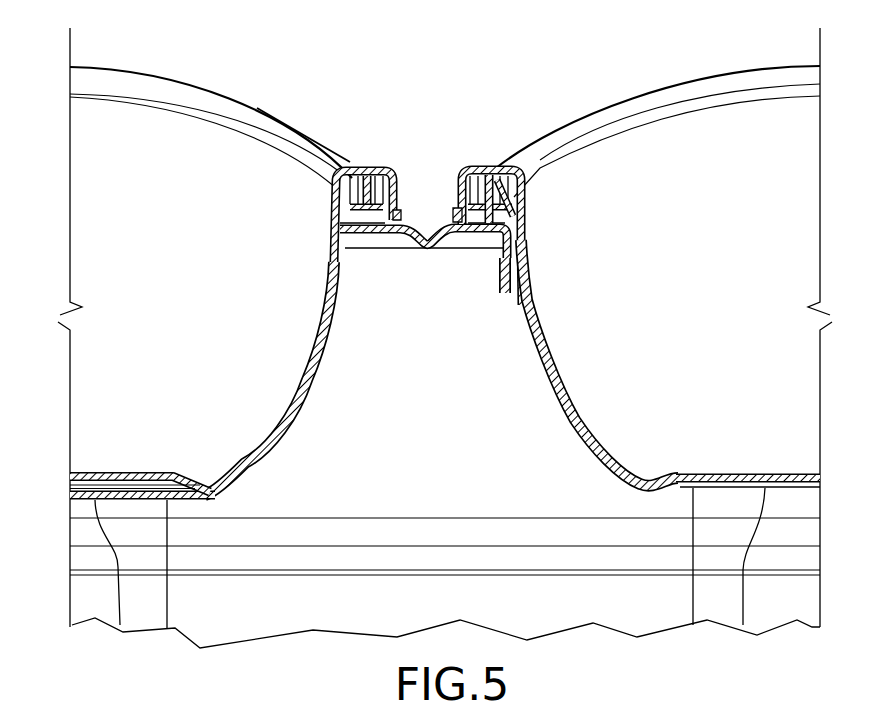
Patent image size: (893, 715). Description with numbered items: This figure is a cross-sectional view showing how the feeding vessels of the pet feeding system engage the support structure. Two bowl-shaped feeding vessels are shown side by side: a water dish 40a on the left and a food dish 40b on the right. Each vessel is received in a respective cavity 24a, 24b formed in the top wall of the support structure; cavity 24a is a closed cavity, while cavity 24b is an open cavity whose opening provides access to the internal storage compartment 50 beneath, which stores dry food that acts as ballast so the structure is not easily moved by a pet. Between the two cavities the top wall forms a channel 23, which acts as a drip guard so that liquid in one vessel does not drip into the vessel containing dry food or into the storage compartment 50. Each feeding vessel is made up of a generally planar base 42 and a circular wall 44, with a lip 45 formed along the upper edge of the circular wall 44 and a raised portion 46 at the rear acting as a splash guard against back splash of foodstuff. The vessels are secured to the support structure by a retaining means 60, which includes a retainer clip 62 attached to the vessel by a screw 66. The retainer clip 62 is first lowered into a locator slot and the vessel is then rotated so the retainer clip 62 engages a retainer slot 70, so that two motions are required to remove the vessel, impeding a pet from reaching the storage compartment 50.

The channel 23 is at (423, 238).
The cavity 24a is at (267, 463).
The cavity 24b is at (542, 350).
The water dish 40a is at (240, 90).
The food dish 40b is at (663, 80).
The base 42 is at (140, 478).
The circular wall 44 is at (313, 378).
The lip 45 is at (293, 132).
The raised portion 46 is at (137, 80).
The internal storage compartment 50 is at (466, 499).
The retaining means 60 is at (548, 237).
The retainer clip 62 is at (527, 257).
The screw 66 is at (492, 187).
The retainer slot 70 is at (497, 288).